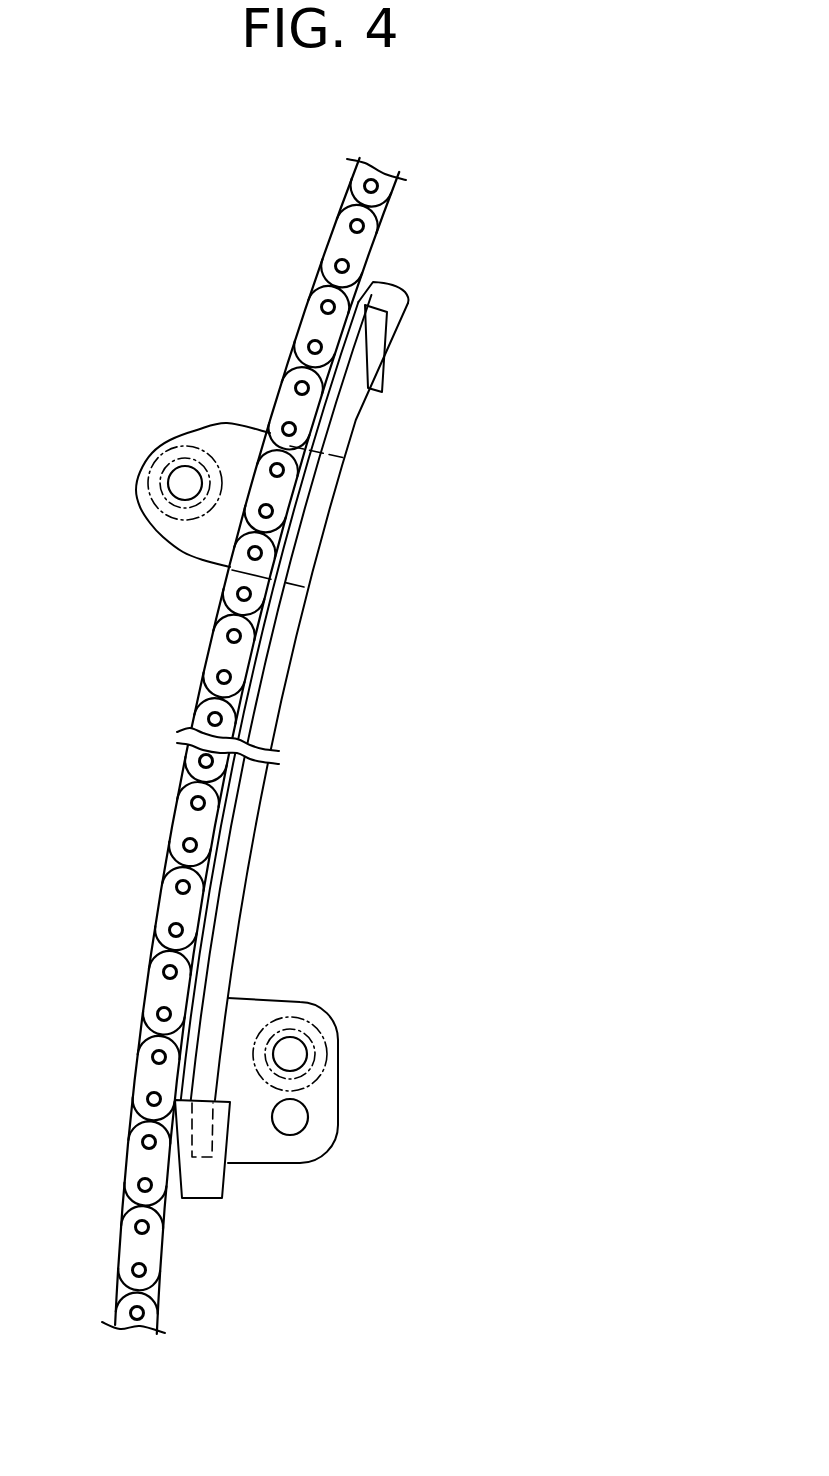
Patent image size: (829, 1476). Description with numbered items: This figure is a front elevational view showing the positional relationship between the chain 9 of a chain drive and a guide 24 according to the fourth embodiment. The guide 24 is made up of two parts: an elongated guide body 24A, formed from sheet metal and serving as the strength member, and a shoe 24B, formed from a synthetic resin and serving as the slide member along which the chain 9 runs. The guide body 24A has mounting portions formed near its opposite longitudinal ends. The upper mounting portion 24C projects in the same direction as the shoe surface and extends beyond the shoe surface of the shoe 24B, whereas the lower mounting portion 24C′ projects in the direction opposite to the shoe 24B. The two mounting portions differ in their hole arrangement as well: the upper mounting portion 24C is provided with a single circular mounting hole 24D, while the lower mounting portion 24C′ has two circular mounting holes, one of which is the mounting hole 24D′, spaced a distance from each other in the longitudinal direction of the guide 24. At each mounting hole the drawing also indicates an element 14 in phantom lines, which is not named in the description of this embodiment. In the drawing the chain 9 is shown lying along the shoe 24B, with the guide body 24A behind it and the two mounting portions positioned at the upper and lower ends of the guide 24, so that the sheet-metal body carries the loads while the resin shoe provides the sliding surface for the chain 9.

The chain 9 is at (148, 892).
The guide 24 is at (305, 740).
The guide body 24A is at (256, 826).
The shoe 24B is at (226, 900).
The upper mounting portion 24C is at (197, 479).
The mounting hole 24D is at (190, 498).
The lower mounting portion 24C′ is at (356, 1123).
The mounting hole 24D′ is at (300, 1059).
The mounting bolt 14 is at (185, 483).